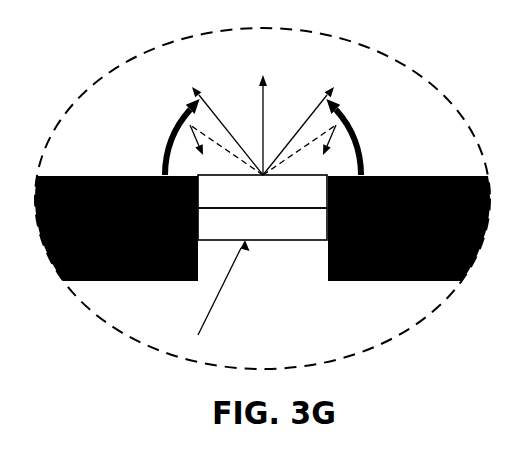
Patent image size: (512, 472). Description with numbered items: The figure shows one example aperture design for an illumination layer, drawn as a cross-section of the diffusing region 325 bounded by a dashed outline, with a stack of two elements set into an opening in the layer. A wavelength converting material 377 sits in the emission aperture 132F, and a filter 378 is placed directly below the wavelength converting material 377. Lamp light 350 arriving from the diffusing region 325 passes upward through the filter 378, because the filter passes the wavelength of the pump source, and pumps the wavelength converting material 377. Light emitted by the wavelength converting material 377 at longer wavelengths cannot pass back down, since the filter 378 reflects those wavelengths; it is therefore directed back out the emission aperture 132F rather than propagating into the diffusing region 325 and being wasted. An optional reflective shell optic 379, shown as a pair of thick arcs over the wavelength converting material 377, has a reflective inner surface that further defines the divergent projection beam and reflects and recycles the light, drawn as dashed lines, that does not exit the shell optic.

The diffusing region 325 is at (264, 198).
The wavelength converting material 377 is at (262, 191).
The filter 378 is at (262, 224).
The lamp light 350 is at (225, 283).
The emission aperture 132F is at (328, 78).
The reflective shell optic 379 is at (358, 147).